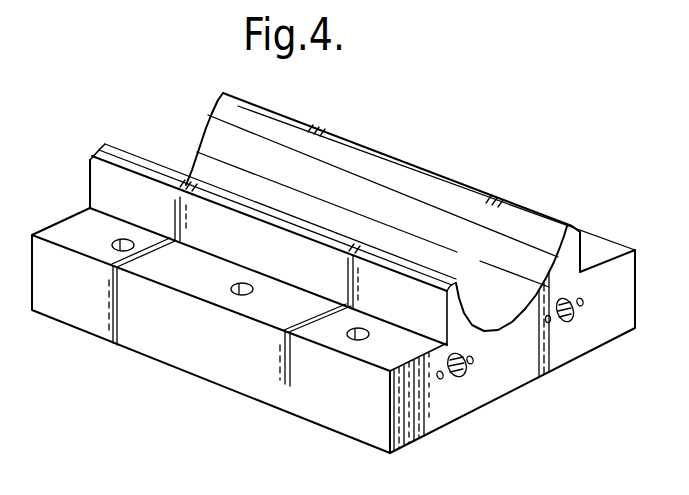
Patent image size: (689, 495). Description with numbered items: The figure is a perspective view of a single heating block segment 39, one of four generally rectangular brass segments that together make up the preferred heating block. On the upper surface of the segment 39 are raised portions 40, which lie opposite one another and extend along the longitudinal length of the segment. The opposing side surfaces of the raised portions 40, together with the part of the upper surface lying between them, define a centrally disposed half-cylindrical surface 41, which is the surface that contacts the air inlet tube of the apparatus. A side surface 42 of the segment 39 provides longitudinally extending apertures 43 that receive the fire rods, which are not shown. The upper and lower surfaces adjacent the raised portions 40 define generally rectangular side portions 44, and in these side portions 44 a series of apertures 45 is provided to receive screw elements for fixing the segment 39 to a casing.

The brass segment 39 is at (184, 391).
The raised portions 40 is at (105, 183).
The half-cylindrical surface 41 is at (400, 213).
The side surface 42 is at (469, 400).
The longitudinally extending apertures 43 is at (573, 318).
The rectangular side portions 44 is at (604, 241).
The apertures 45 is at (357, 338).